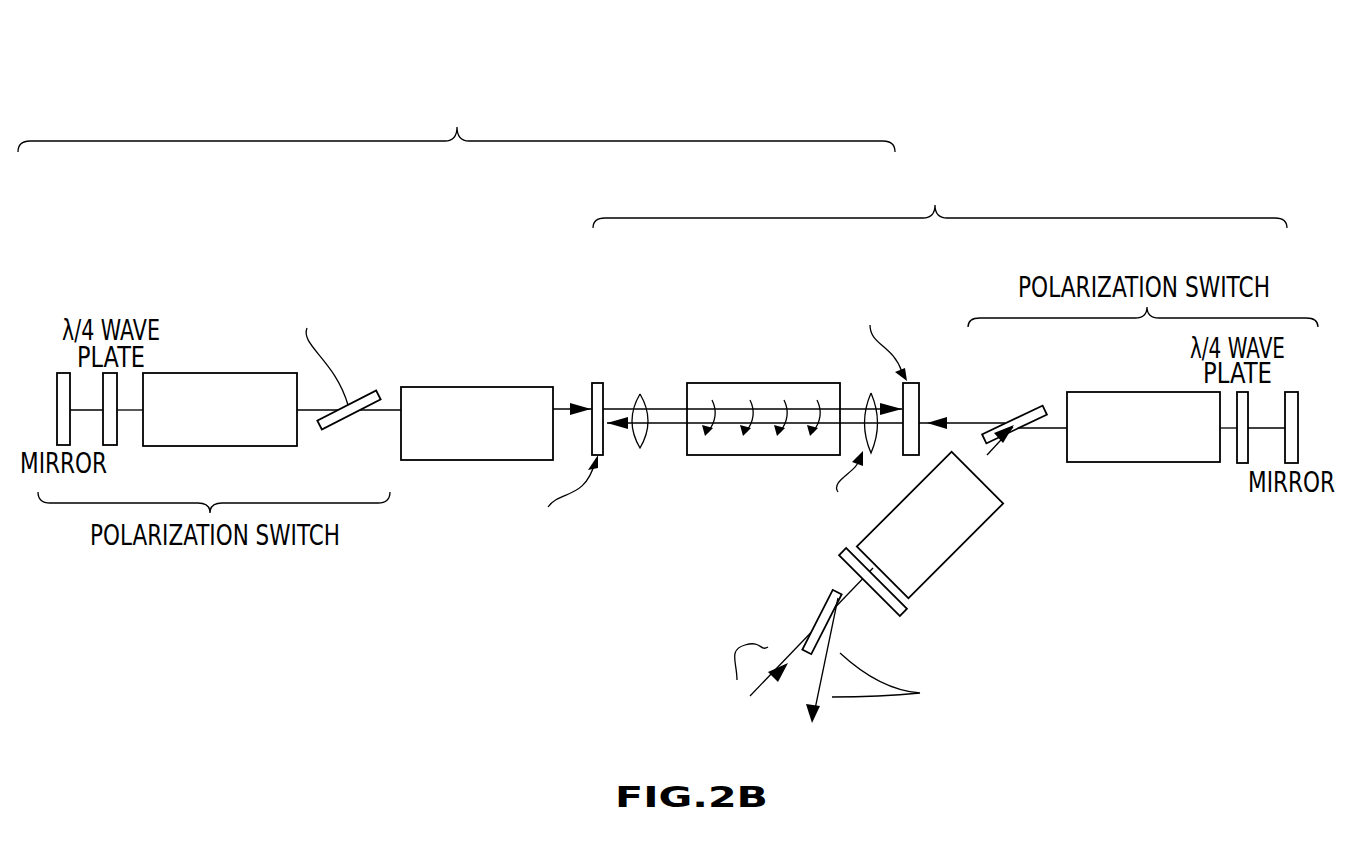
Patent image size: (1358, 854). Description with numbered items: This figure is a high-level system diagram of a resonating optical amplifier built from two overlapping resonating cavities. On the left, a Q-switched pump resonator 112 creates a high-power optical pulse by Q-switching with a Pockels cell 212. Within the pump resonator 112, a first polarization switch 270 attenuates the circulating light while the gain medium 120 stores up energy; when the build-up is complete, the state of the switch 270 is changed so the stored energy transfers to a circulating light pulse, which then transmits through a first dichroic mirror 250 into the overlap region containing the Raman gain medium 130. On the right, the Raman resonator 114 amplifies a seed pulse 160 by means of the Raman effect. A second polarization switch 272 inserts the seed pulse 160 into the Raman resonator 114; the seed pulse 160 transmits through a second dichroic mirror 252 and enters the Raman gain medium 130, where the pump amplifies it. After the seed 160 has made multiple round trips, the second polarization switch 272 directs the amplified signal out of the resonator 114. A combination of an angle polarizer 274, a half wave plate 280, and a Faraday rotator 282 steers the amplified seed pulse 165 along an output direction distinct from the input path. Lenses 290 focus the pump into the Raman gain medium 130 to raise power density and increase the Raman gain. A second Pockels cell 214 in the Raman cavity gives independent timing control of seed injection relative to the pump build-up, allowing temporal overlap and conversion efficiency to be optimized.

The pump resonator 112 is at (563, 94).
The Raman resonator 114 is at (1026, 172).
The gain medium 120 is at (458, 387).
The Raman gain medium 130 is at (694, 456).
The seed pulse 160 is at (718, 677).
The amplified seed pulse 165 is at (1008, 723).
The Pockels cell 212 is at (182, 373).
The Pockels cell 214 is at (1180, 463).
The first dichroic mirror 250 is at (598, 383).
The second dichroic mirror 252 is at (918, 382).
The first polarization switch 270 is at (350, 298).
The second polarization switch 272 is at (1015, 430).
The angle polarizer 274 is at (838, 595).
The half wave plate 280 is at (1012, 610).
The Faraday rotator 282 is at (972, 538).
The lenses 290 is at (650, 370).